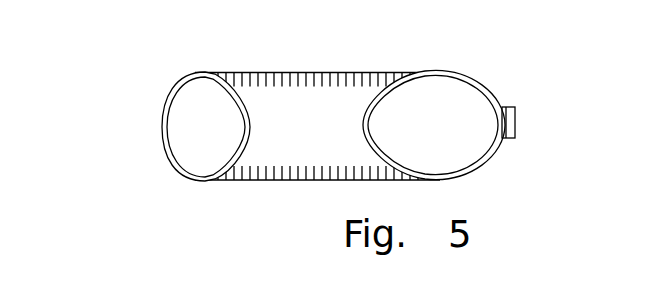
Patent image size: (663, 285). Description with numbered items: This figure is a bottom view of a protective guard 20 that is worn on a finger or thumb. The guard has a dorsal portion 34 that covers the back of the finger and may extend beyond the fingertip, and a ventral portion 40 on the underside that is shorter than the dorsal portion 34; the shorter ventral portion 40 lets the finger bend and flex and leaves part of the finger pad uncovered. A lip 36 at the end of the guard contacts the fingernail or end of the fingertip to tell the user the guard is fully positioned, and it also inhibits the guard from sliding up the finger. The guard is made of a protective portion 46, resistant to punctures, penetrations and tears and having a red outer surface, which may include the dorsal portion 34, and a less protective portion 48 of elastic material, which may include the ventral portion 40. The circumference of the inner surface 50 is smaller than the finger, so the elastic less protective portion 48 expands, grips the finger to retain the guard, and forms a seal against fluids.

The protective guard 20 is at (91, 43).
The dorsal portion 34 is at (222, 140).
The lip 36 is at (515, 122).
The ventral portion 40 is at (317, 129).
The protective portion 46 is at (298, 80).
The less protective portion 48 is at (309, 140).
The inner surface 50 is at (451, 138).